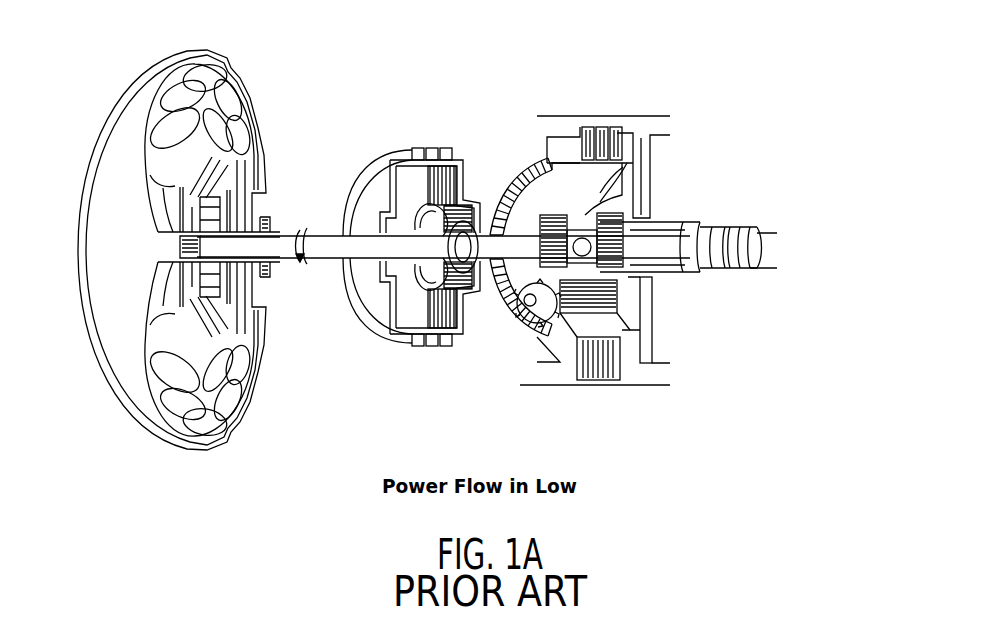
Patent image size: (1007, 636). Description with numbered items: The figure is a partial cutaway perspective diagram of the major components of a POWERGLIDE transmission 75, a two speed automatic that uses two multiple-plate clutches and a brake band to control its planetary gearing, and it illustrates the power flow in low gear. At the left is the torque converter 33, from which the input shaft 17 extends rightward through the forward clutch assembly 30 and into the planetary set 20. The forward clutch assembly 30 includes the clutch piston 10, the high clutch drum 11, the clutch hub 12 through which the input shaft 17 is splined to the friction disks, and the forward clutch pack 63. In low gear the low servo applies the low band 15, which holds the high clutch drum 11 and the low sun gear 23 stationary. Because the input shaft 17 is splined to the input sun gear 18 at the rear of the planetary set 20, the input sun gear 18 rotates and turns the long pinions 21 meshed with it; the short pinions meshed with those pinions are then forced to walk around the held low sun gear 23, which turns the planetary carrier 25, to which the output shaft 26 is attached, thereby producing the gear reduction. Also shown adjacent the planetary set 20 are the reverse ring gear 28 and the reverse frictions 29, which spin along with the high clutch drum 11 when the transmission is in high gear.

The clutch piston 10 is at (407, 312).
The high clutch drum 11 is at (380, 178).
The clutch hub 12 is at (427, 210).
The low band 15 is at (432, 350).
The input shaft 17 is at (330, 237).
The input sun gear 18 is at (613, 210).
The planetary set 20 is at (550, 173).
The long pinions 21 is at (573, 323).
The low sun gear 23 is at (547, 217).
The planetary carrier 25 is at (630, 300).
The output shaft 26 is at (750, 267).
The reverse ring gear 28 is at (553, 196).
The reverse frictions 29 is at (612, 125).
The forward clutch assembly 30 is at (344, 307).
The torque converter 33 is at (255, 431).
The forward clutch pack 63 is at (470, 323).
The POWERGLIDE transmission 75 is at (730, 107).